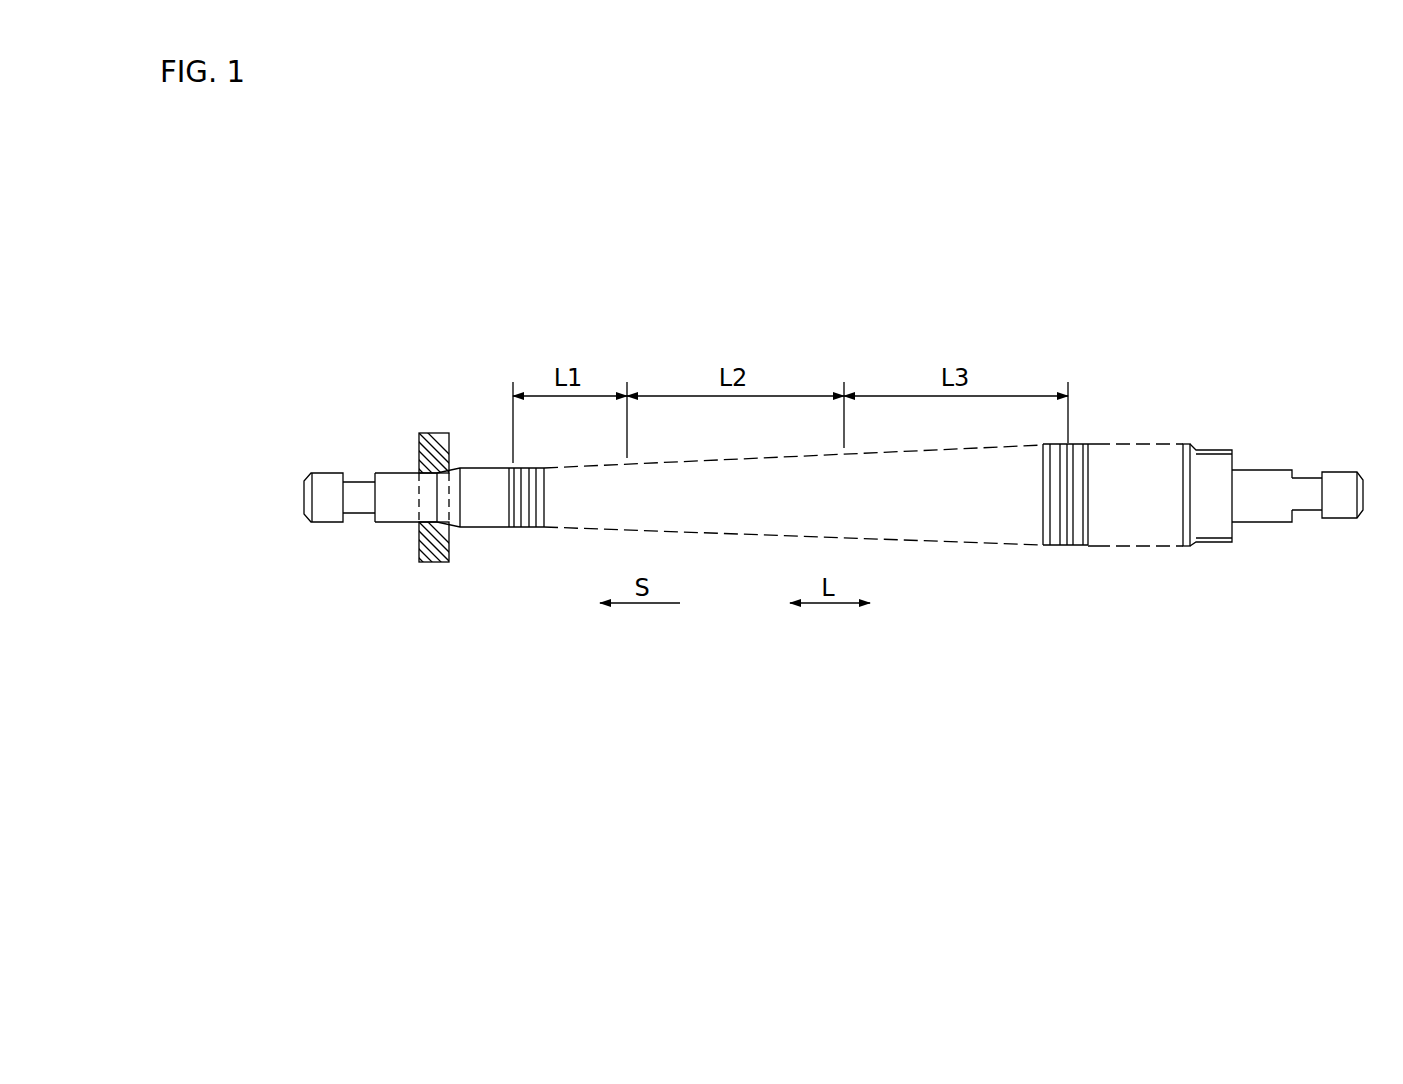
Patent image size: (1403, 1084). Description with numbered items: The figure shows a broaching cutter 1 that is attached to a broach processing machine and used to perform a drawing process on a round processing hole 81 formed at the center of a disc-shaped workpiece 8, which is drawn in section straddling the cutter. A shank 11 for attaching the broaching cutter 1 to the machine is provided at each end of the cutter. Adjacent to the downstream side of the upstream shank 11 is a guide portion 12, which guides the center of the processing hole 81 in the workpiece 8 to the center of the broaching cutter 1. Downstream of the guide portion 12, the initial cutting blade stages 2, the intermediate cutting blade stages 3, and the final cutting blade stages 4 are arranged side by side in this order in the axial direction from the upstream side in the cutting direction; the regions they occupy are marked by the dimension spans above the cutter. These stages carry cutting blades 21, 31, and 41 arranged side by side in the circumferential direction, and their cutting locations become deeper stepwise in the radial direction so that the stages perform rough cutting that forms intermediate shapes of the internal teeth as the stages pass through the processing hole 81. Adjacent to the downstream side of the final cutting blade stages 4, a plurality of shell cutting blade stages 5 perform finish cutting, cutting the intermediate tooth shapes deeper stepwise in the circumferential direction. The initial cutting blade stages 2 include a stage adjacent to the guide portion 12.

The broaching cutter 1 is at (1205, 385).
The initial cutting blade stages 2 is at (528, 528).
The cutting blades 21 is at (549, 583).
The intermediate cutting blade stages 3 is at (718, 523).
The cutting blades 31 is at (793, 573).
The final cutting blade stages 4 is at (970, 508).
The cutting blades 41 is at (1031, 556).
The shell cutting blade stages 5 is at (1135, 522).
The workpiece 8 is at (435, 447).
The processing hole 81 is at (420, 483).
The shank 11 is at (325, 508).
The guide portion 12 is at (485, 515).